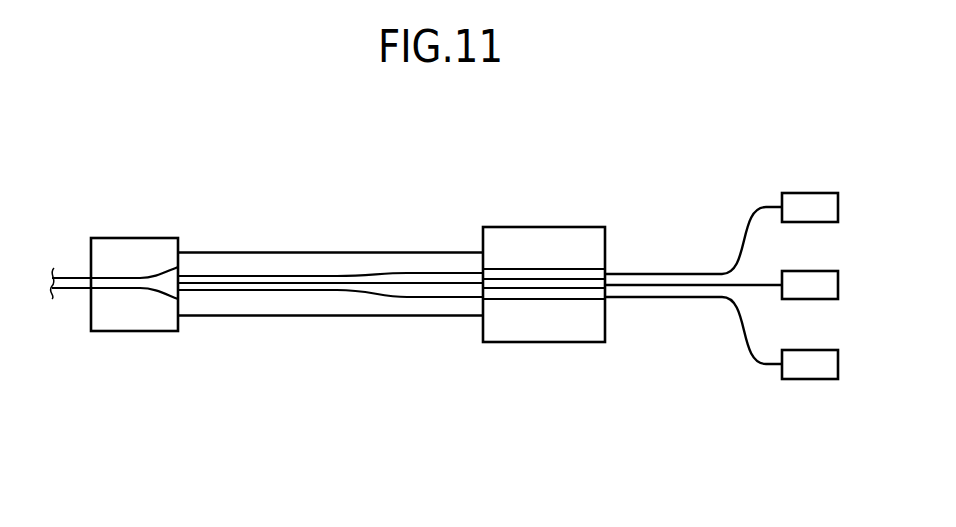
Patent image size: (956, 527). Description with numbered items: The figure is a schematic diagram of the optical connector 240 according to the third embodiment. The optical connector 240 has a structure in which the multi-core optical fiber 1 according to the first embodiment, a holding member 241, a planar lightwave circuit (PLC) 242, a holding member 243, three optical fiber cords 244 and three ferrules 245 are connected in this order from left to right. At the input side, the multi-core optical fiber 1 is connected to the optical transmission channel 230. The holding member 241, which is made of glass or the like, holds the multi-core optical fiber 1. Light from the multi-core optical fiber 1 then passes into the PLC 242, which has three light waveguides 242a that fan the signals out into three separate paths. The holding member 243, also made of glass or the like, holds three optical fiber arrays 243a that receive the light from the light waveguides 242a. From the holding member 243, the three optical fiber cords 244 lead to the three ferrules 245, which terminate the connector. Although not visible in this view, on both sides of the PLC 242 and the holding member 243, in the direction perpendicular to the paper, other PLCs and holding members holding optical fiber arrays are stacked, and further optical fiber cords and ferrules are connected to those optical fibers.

The optical connector 240 is at (615, 140).
The optical transmission channel 230 is at (72, 278).
The multi-core optical fiber 1 is at (115, 278).
The holding member 241 is at (157, 238).
The planar lightwave circuit (PLC) 242 is at (315, 252).
The light waveguides 242a is at (414, 270).
The optical fiber arrays 243a is at (517, 268).
The holding member 243 is at (573, 227).
The optical fiber cords 244 is at (669, 273).
The ferrules 245 is at (807, 193).